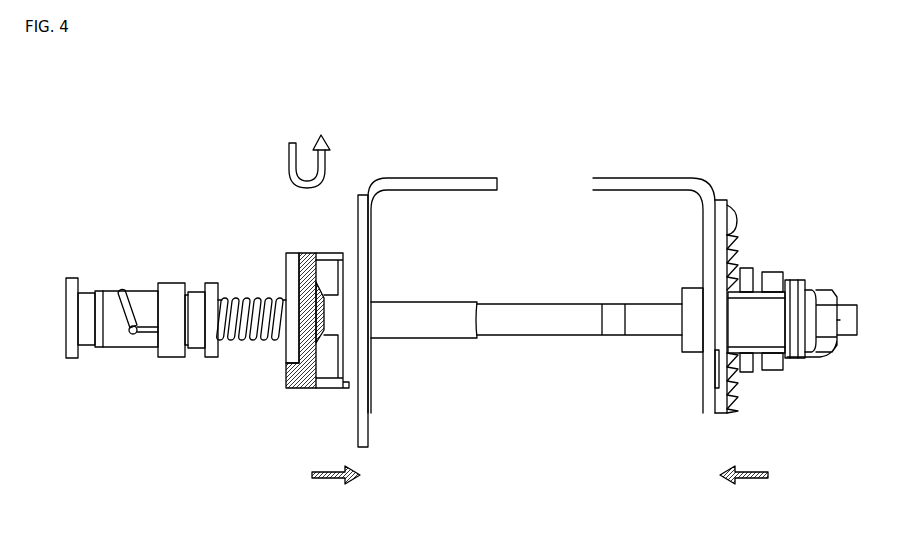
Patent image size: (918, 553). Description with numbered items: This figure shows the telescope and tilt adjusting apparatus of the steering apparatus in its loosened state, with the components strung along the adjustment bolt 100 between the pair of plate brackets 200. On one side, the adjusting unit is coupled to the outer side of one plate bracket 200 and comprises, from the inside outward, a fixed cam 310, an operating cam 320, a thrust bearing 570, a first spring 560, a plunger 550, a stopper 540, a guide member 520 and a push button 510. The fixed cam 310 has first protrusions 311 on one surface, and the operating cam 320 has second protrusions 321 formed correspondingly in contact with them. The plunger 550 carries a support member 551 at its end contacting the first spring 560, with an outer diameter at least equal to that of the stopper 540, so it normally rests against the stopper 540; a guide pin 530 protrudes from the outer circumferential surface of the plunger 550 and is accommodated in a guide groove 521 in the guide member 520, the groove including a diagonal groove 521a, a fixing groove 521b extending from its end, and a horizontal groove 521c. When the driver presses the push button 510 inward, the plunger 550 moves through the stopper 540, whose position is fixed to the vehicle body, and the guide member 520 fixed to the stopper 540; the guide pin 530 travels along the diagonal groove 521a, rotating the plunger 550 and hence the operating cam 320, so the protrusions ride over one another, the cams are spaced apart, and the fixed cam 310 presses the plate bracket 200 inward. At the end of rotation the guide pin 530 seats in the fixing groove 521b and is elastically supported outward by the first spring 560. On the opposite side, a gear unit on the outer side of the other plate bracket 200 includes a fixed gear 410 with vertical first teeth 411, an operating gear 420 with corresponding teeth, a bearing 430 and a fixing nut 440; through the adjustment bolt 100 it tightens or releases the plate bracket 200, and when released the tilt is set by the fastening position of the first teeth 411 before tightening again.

The adjustment bolt 100 is at (540, 308).
The plate bracket 200 is at (545, 130).
The fixed cam 310 is at (348, 361).
The first protrusions 311 is at (333, 320).
The operating cam 320 is at (308, 262).
The second protrusions 321 is at (318, 307).
The fixed gear 410 is at (728, 207).
The first teeth 411 is at (737, 405).
The operating gear 420 is at (748, 365).
The bearing 430 is at (795, 285).
The fixing nut 440 is at (823, 295).
The push button 510 is at (73, 285).
The guide member 520 is at (110, 300).
The guide groove 521 is at (108, 354).
The diagonal groove 521a is at (95, 337).
The fixing groove 521b is at (133, 340).
The horizontal groove 521c is at (156, 373).
The guide pin 530 is at (140, 323).
The stopper 540 is at (170, 290).
The plunger 550 is at (190, 288).
The support member 551 is at (209, 353).
The first spring 560 is at (250, 340).
The thrust bearing 570 is at (288, 273).